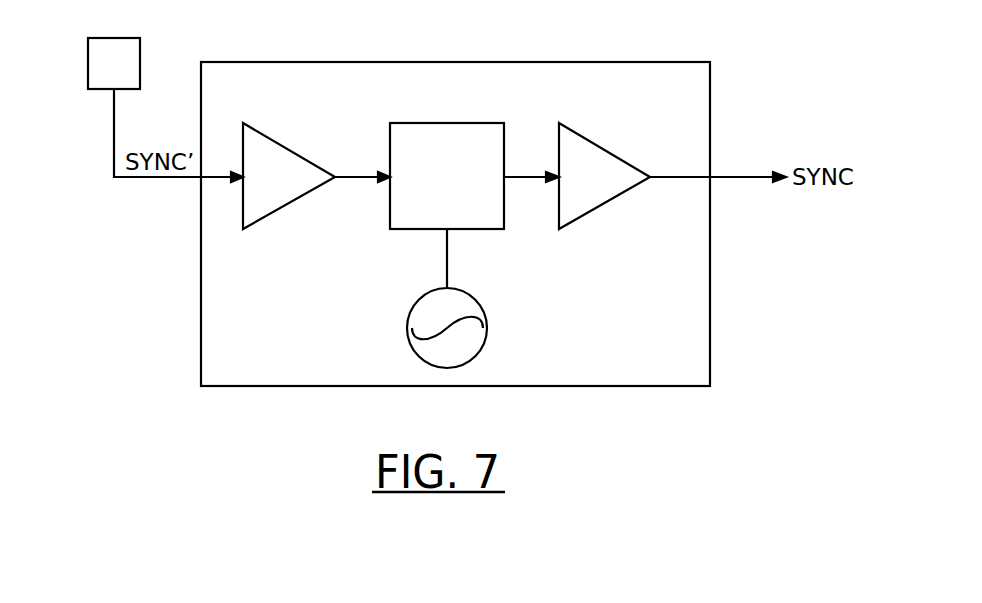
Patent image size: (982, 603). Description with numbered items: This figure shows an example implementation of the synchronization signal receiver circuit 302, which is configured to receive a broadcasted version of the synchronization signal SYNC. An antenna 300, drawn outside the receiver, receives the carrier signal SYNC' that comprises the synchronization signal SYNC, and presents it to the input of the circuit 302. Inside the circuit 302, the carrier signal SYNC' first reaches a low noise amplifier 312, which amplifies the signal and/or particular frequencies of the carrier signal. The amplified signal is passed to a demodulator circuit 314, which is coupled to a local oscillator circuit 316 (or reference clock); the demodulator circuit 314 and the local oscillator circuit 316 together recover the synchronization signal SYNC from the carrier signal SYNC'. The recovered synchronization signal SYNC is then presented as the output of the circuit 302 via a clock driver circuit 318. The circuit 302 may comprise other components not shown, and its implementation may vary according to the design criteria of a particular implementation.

The antenna 300 is at (108, 37).
The synchronization signal receiver circuit 302 is at (290, 62).
The low noise amplifier 312 is at (253, 127).
The demodulator circuit 314 is at (443, 123).
The local oscillator circuit 316 is at (428, 292).
The clock driver circuit 318 is at (572, 127).